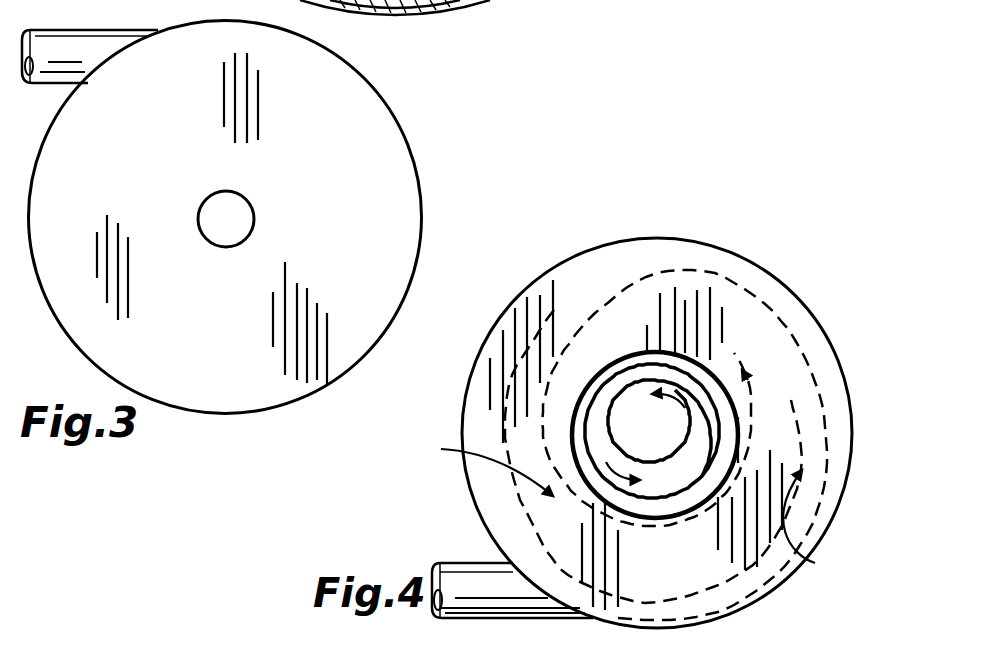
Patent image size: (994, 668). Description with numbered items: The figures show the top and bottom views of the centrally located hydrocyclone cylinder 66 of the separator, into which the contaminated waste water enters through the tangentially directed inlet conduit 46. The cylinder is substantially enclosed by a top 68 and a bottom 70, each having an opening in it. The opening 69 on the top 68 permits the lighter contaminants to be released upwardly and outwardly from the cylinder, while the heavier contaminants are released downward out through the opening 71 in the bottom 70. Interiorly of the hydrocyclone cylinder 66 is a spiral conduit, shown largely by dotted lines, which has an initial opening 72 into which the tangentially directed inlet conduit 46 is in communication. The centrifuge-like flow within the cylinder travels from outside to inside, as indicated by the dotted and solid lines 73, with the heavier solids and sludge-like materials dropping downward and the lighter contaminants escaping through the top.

In FIG. 3, the inlet conduit 46 is at (64, 44).
In FIG. 4, the inlet conduit 46 is at (462, 576).
In FIG. 3, the hydrocyclone cylinder 66 is at (421, 186).
In FIG. 4, the hydrocyclone cylinder 66 is at (755, 264).
In FIG. 3, the top 68 is at (378, 238).
In FIG. 3, the opening 69 is at (252, 200).
In FIG. 4, the bottom 70 is at (632, 316).
In FIG. 4, the opening 71 is at (712, 380).
In FIG. 4, the initial opening 72 is at (672, 587).
In FIG. 4, the dotted and solid lines 73 is at (660, 424).